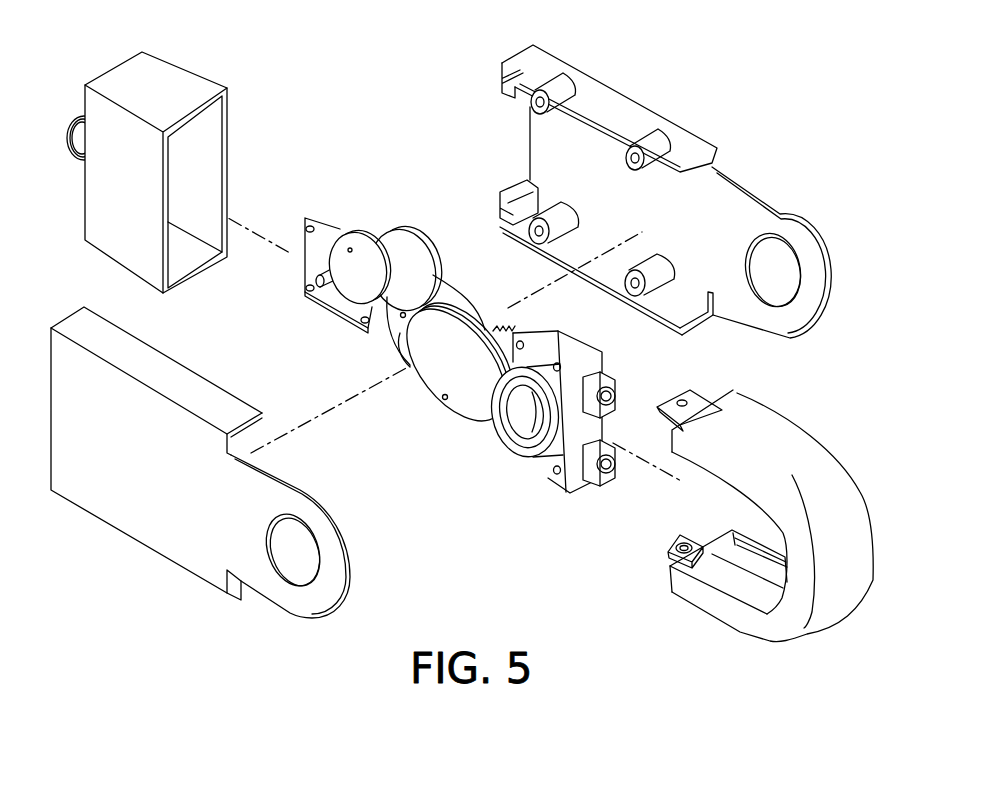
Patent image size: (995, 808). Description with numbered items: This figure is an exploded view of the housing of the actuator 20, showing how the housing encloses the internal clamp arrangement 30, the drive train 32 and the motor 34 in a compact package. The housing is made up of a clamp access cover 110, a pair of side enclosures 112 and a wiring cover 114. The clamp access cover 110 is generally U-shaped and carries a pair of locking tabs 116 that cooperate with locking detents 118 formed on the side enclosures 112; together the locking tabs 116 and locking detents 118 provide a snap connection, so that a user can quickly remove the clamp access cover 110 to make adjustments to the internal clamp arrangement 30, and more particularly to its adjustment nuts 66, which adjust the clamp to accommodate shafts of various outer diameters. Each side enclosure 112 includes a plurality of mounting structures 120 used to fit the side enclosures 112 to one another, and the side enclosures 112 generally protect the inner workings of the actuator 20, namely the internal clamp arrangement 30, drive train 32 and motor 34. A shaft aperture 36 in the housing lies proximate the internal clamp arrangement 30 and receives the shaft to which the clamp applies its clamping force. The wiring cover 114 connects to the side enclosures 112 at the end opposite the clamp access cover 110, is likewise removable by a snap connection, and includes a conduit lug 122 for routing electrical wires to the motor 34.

The actuator 20 is at (250, 690).
The internal clamp arrangement 30 is at (561, 502).
The drive train 32 is at (438, 422).
The motor 34 is at (362, 210).
The shaft aperture 36 is at (783, 260).
The adjustment nuts 66 is at (613, 390).
The clamp access cover 110 is at (845, 512).
The side enclosures 112 is at (615, 108).
The wiring cover 114 is at (180, 80).
The locking tabs 116 is at (708, 398).
The locking detents 118 is at (712, 160).
The mounting structures 120 is at (570, 95).
The conduit lug 122 is at (72, 128).